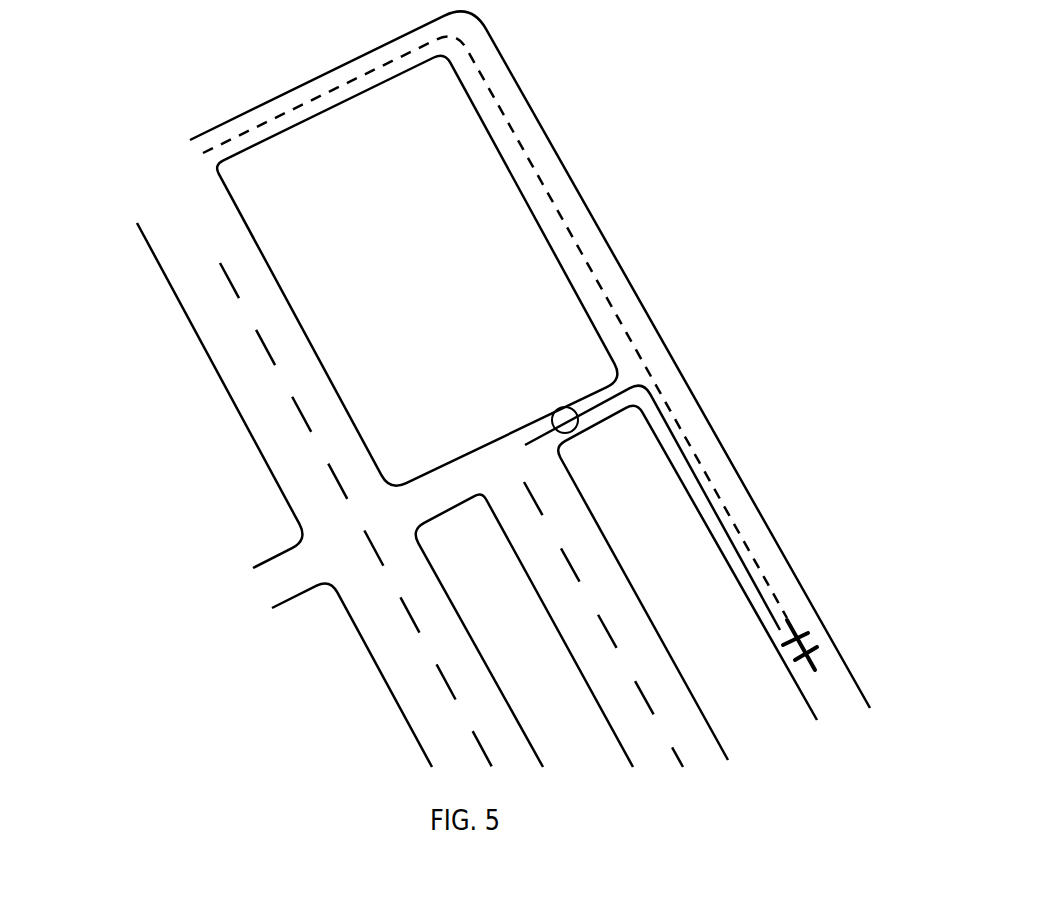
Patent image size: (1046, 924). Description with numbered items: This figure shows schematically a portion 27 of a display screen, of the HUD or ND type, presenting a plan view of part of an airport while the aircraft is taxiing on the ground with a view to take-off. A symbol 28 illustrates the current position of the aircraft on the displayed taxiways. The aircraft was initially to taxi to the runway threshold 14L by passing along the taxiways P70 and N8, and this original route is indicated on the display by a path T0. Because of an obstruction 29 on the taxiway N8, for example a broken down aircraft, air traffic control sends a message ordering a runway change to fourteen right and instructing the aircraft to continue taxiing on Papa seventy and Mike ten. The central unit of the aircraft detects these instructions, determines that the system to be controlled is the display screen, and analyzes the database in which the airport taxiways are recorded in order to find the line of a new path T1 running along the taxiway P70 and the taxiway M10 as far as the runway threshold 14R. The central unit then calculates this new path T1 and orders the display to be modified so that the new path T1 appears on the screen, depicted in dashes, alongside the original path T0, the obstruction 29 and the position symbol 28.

The taxiway M10 is at (294, 106).
The new path T1 is at (595, 276).
The taxiway N8 is at (574, 397).
The runway threshold 14R is at (190, 263).
The portion of a screen 27 is at (198, 595).
The runway threshold 14L is at (551, 488).
The path T0 is at (732, 543).
The taxiway P70 is at (727, 489).
The obstruction 29 is at (554, 412).
The symbol 28 is at (810, 634).